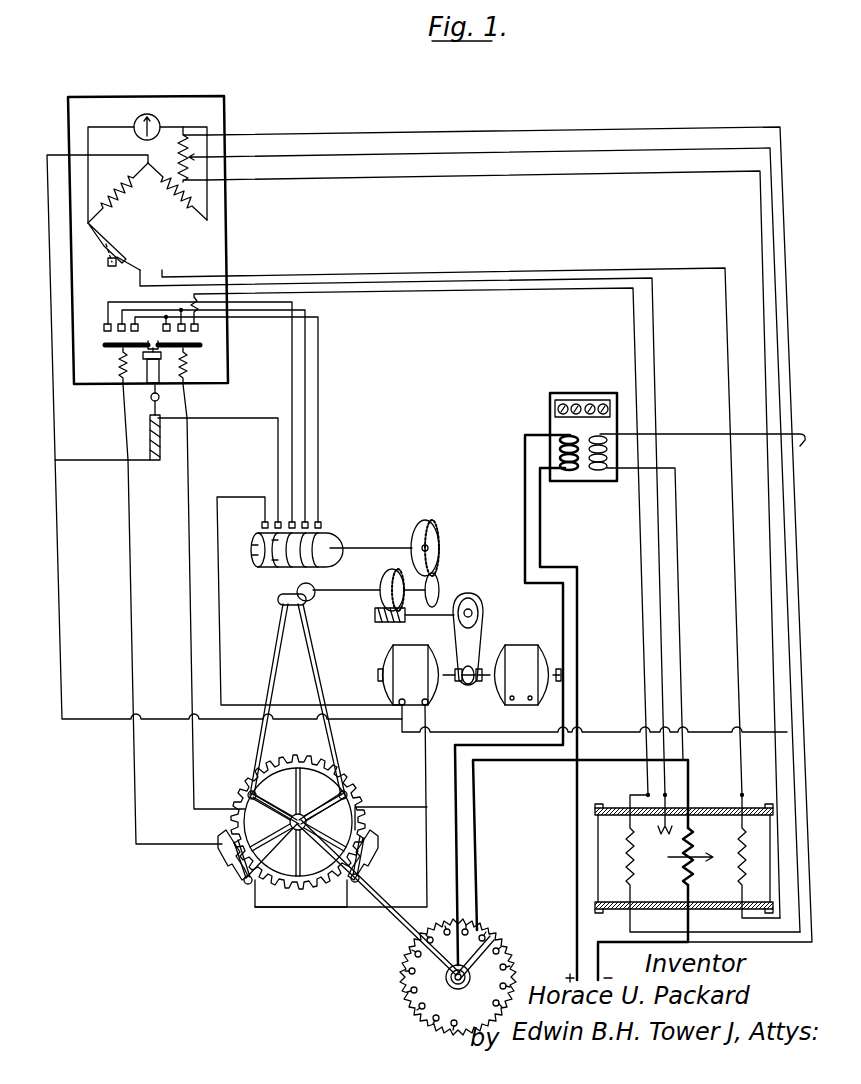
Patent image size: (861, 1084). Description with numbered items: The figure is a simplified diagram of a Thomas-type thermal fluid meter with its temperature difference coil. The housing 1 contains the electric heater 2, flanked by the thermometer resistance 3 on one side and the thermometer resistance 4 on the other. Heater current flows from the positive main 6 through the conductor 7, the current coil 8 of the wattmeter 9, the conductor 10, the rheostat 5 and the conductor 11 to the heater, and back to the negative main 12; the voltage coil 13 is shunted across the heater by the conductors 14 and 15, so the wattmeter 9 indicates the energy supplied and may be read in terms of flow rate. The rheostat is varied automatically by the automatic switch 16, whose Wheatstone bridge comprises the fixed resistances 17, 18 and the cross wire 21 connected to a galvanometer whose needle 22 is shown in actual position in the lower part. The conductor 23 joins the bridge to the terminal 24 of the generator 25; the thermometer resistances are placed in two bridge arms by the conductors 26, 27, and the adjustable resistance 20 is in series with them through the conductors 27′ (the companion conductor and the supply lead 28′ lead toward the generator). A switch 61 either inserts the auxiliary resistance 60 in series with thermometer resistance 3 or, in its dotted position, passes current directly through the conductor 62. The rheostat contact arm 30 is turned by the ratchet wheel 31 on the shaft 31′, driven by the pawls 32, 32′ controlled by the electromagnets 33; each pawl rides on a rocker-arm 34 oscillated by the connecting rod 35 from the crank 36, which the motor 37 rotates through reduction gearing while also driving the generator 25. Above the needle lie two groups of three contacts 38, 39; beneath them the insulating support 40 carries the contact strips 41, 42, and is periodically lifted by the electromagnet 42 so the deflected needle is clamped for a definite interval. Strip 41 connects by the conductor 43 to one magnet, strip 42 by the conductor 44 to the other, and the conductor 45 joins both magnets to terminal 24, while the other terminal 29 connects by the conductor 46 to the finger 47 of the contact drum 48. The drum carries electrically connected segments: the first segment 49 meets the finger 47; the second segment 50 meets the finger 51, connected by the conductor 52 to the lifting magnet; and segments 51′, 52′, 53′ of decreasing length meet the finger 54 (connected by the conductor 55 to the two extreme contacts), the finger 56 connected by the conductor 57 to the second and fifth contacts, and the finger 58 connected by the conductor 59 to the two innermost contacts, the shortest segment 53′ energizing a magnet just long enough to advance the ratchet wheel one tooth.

The housing 1 is at (622, 808).
The electric heater 2 is at (683, 871).
The thermometer resistance 3 is at (625, 851).
The thermometer resistance 4 is at (750, 857).
The rheostat 5 is at (514, 960).
The positive main 6 is at (576, 958).
The conductor 7 is at (580, 644).
The current coil 8 is at (560, 452).
The wattmeter 9 is at (580, 393).
The conductor 10 is at (563, 597).
The conductor 11 is at (618, 760).
The negative main 12 is at (600, 958).
The voltage coil 13 is at (608, 450).
The conductor 14 is at (680, 659).
The conductor 15 is at (804, 435).
The automatic switch 16 is at (228, 220).
The fixed resistance 17 is at (116, 198).
The fixed resistance 18 is at (176, 199).
The adjustable resistance 20 is at (180, 157).
The cross wire 21 is at (180, 126).
The galvanometer needle 22 is at (136, 123).
The conductor 23 is at (52, 433).
The generator terminal 24 is at (428, 706).
The generator 25 is at (392, 659).
The conductor 26 is at (340, 276).
The conductor 27 is at (400, 280).
The conductor 27′ is at (598, 126).
The conductor 28′ is at (604, 149).
The generator terminal 29 is at (400, 706).
The contact arm 30 is at (466, 978).
The ratchet wheel 31 is at (350, 796).
The shaft 31′ is at (385, 898).
The pawl 32 is at (243, 880).
The pawl 32′ is at (370, 858).
The electromagnet 33 is at (219, 850).
The rocker-arm 34 is at (296, 816).
The connecting rod 35 is at (310, 679).
The crank 36 is at (308, 604).
The motor 37 is at (516, 648).
The contacts 38 is at (118, 332).
The contacts 39 is at (197, 331).
The insulating support 40 is at (190, 360).
The contact strip 41 is at (108, 350).
The contact strip / electromagnet 42 is at (196, 350).
The conductor 43 is at (134, 540).
The conductor 44 is at (190, 540).
The conductor 45 is at (355, 908).
The conductor 46 is at (214, 533).
The finger 47 is at (262, 524).
The contact drum 48 is at (251, 554).
The contact segment 49 is at (268, 566).
The contact segment 50 is at (282, 563).
The finger 51 is at (278, 521).
The contact segment 51′ is at (309, 566).
The conductor 52 is at (278, 460).
The contact segment 52′ is at (330, 562).
The contact segment 53′ is at (334, 553).
The finger 54 is at (295, 521).
The conductor 55 is at (294, 426).
The brush 56 is at (308, 521).
The conductor 57 is at (307, 451).
The finger 58 is at (321, 522).
The conductor 59 is at (320, 471).
The auxiliary resistance 60 is at (660, 827).
The switch 61 is at (114, 252).
The conductor 62 is at (442, 292).